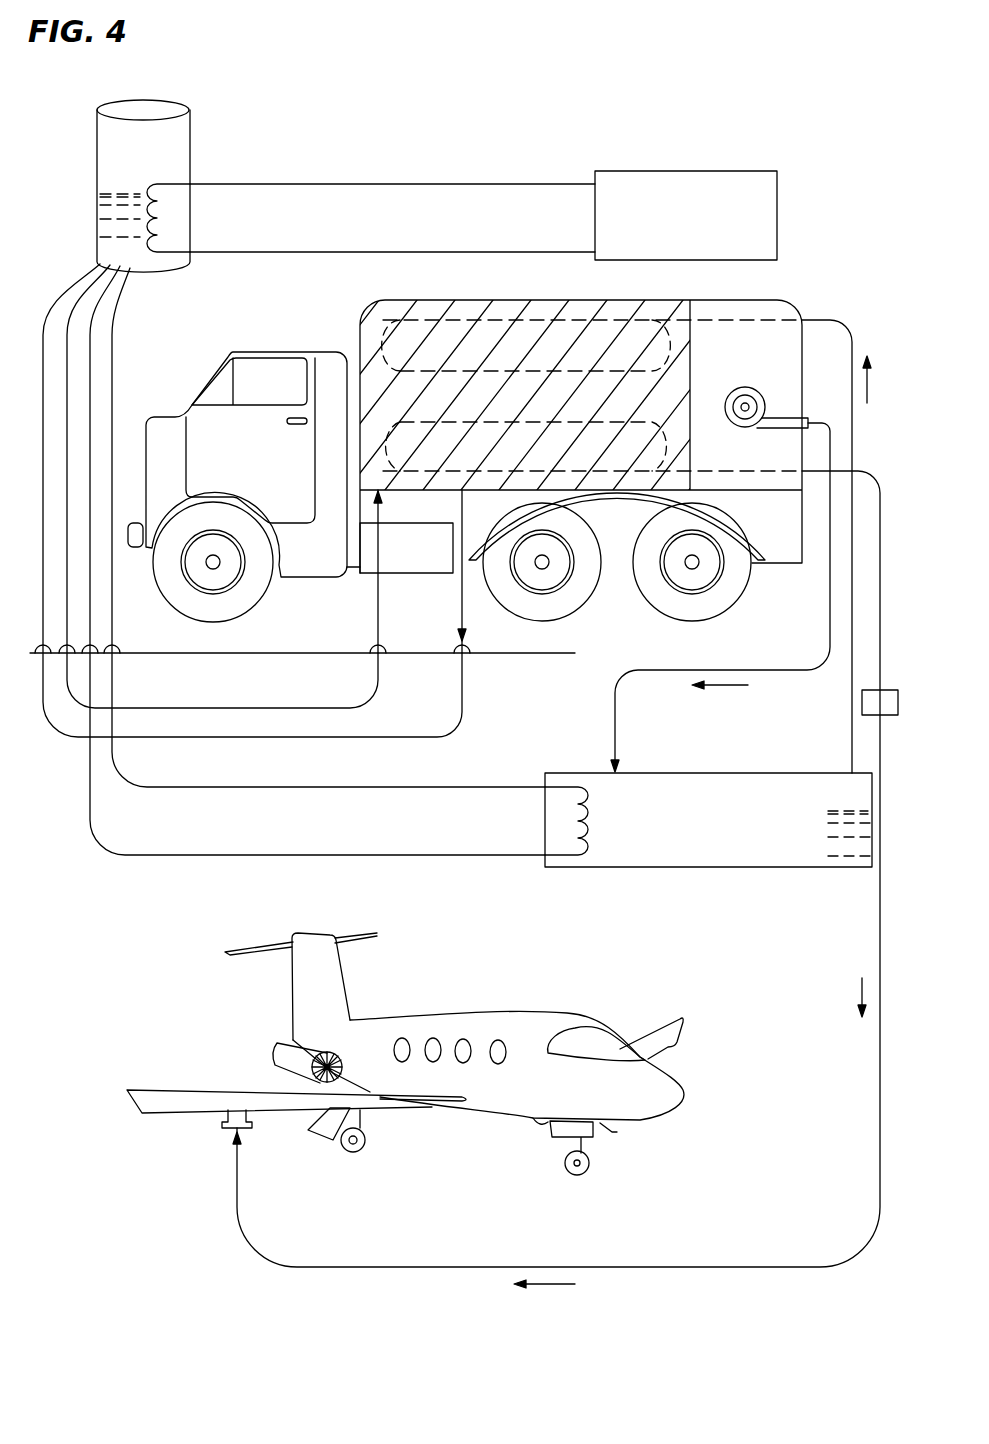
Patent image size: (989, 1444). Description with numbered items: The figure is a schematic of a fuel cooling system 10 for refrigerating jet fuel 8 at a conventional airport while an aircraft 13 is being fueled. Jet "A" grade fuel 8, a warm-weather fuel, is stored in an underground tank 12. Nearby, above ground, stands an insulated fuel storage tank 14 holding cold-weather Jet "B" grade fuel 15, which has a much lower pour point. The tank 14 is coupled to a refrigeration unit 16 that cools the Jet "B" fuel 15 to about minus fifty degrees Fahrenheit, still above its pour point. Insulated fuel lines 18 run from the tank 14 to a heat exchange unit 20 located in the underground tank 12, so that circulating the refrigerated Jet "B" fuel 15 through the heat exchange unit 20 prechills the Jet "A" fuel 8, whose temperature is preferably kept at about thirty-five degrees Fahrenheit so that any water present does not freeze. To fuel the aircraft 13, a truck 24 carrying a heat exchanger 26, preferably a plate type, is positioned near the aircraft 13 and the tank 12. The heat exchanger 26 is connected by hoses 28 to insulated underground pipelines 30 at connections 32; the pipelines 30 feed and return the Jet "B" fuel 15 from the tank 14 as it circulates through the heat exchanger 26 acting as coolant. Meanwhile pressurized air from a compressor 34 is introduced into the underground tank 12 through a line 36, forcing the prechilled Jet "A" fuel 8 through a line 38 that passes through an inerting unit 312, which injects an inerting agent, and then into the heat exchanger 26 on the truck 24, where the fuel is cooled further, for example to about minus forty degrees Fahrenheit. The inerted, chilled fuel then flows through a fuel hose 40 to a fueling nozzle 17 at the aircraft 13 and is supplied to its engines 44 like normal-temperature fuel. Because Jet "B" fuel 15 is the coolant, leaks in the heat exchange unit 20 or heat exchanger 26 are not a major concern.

The Jet "A" grade fuel 8 is at (855, 843).
The fuel cooling system 10 is at (605, 157).
The underground tank 12 is at (695, 773).
The aircraft 13 is at (678, 1098).
The insulated fuel storage tank 14 is at (173, 108).
The Jet "B" grade fuel 15 is at (100, 212).
The refrigeration unit 16 is at (777, 203).
The fuel nozzle 17 is at (222, 1102).
The insulated fuel lines 18 is at (114, 388).
The heat exchange unit 20 is at (590, 833).
The truck 24 is at (284, 352).
The heat exchanger 26 is at (462, 300).
The hoses 28 is at (462, 593).
The insulated underground pipelines 30 is at (222, 708).
The connections 32 is at (468, 647).
The compressor 34 is at (742, 388).
The line 36 is at (828, 586).
The line 38 is at (852, 742).
The fuel hose 40 is at (728, 1267).
The engines 44 is at (272, 1056).
The inerting unit 312 is at (862, 703).